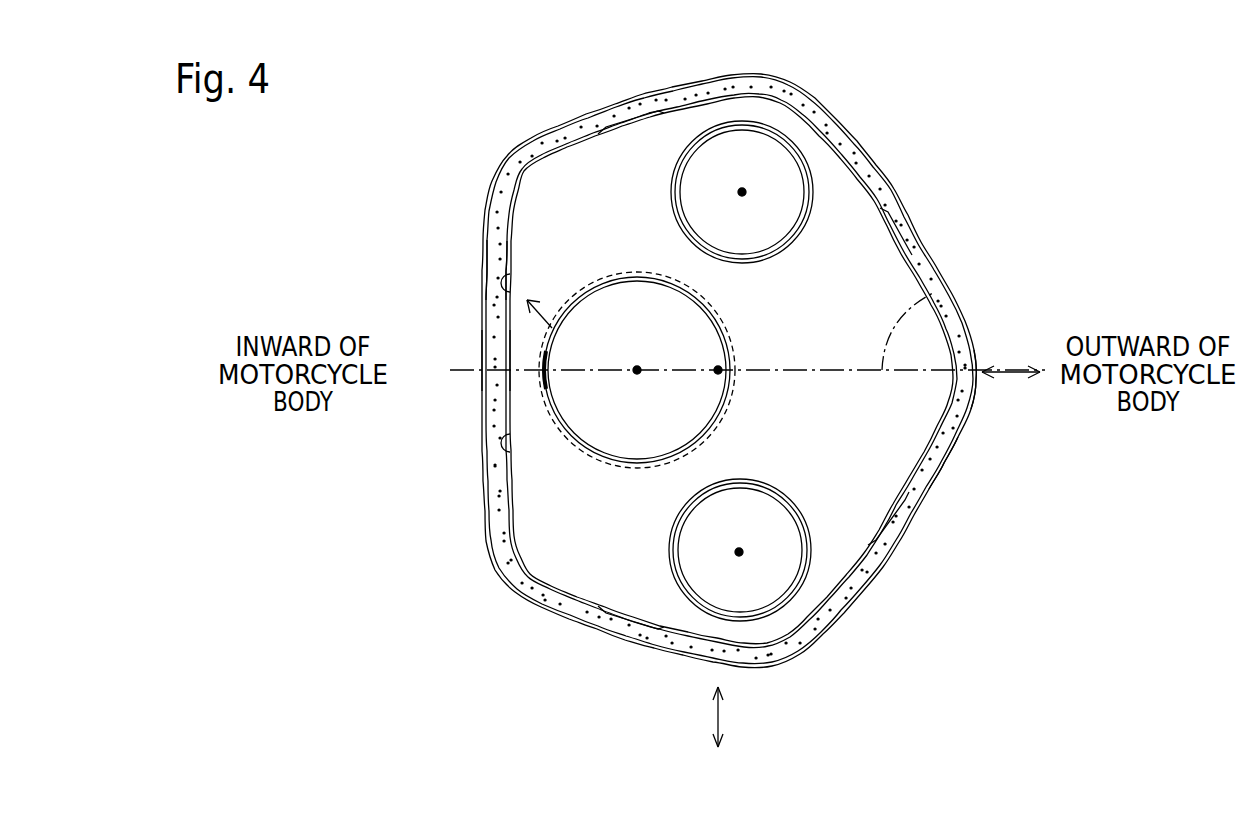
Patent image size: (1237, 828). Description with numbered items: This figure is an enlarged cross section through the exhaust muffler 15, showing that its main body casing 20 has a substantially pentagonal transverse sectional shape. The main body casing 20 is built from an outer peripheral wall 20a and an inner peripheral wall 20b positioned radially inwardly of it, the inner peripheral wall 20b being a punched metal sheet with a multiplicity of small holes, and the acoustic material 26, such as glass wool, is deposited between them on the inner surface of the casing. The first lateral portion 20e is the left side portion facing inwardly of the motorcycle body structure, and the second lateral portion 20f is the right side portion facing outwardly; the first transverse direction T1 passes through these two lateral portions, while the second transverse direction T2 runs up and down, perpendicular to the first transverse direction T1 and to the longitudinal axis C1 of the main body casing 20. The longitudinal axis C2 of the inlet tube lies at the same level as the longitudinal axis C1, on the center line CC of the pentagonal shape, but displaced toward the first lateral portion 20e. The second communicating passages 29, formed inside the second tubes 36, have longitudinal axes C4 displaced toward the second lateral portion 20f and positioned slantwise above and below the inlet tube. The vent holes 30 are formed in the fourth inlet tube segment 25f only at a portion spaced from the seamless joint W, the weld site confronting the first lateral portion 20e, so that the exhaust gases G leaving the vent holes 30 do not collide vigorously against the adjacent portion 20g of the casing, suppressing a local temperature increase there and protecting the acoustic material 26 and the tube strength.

The exhaust muffler 15 is at (923, 217).
The main body casing 20 is at (652, 50).
The outer peripheral wall 20a is at (565, 121).
The inner peripheral wall 20b is at (600, 137).
The first lateral portion 20e is at (482, 380).
The second lateral portion 20f is at (982, 366).
The adjacent portion 20g is at (513, 357).
The fourth inlet tube segment 25f is at (542, 336).
The acoustic material 26 is at (945, 437).
The second communicating passage 29 is at (780, 185).
The vent holes 30 is at (582, 294).
The second tube 36 is at (777, 137).
The seamless joint W is at (538, 383).
The exhaust gases G is at (548, 320).
The longitudinal axis of the main body casing C1 is at (718, 370).
The longitudinal axis of the inlet tube C2 is at (637, 370).
The longitudinal axes of the second communicating passages C4 is at (742, 192).
The center line CC is at (933, 293).
The first transverse direction T1 is at (1015, 377).
The second transverse direction T2 is at (720, 716).